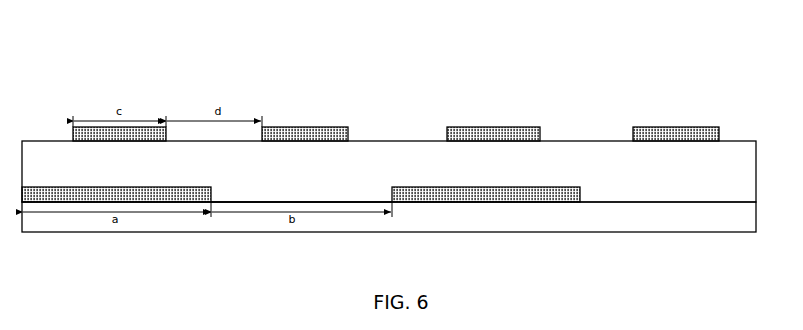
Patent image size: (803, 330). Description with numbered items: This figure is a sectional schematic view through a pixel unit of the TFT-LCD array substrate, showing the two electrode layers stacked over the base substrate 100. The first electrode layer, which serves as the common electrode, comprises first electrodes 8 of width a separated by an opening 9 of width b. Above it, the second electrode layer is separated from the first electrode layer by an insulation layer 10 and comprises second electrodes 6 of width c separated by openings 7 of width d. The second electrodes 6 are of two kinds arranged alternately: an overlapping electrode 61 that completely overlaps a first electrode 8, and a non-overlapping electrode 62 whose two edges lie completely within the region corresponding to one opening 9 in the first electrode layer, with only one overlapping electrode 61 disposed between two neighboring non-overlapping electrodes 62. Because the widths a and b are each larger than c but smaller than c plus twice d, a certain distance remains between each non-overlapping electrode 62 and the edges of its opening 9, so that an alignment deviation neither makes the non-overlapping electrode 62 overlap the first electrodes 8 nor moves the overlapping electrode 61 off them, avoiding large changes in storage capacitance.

The second electrode 6 is at (470, 138).
The overlapping electrode 61 is at (120, 138).
The non-overlapping electrode 62 is at (302, 137).
The opening in the second electrode layer 7 is at (392, 141).
The first electrode 8 is at (478, 200).
The opening in the first electrode layer 9 is at (347, 197).
The insulation layer 10 is at (200, 172).
The substrate 100 is at (538, 218).